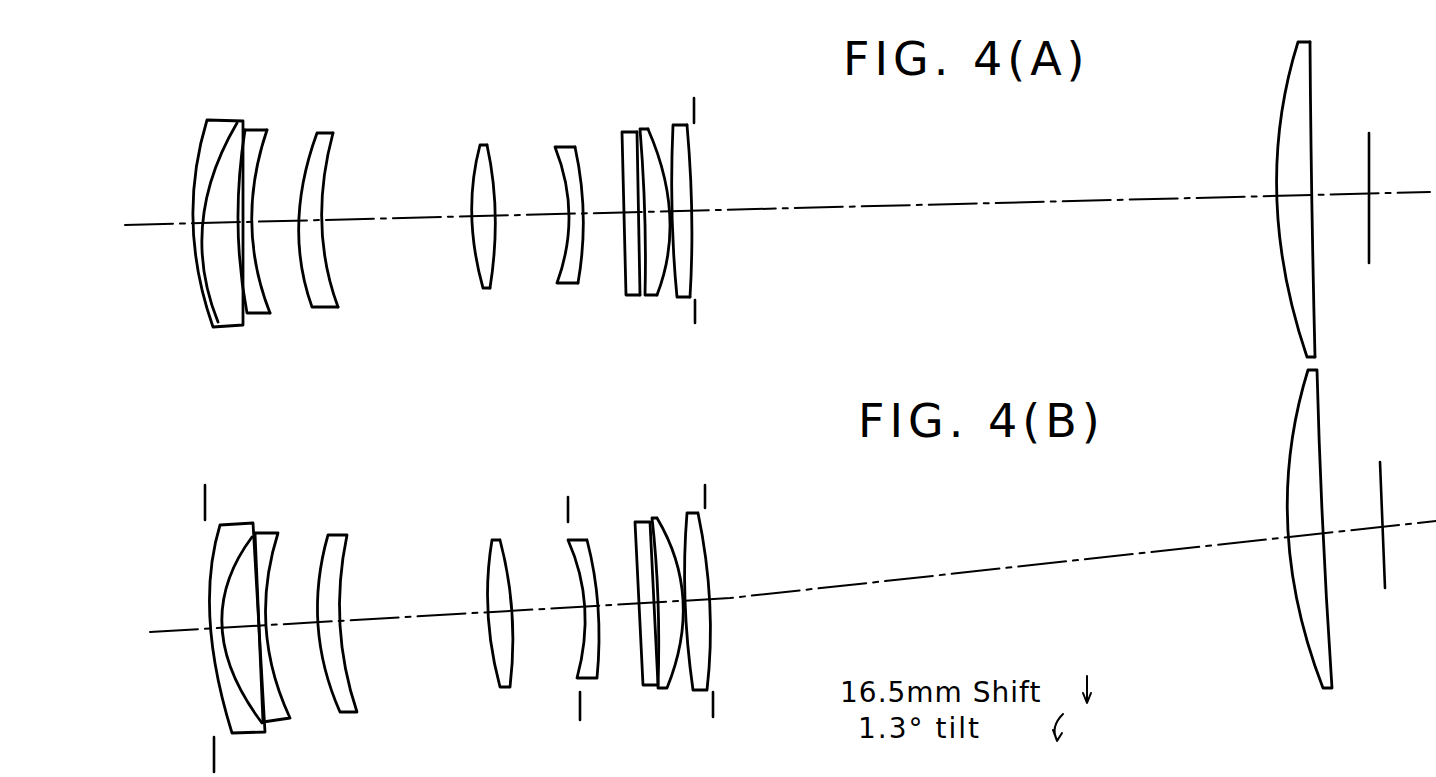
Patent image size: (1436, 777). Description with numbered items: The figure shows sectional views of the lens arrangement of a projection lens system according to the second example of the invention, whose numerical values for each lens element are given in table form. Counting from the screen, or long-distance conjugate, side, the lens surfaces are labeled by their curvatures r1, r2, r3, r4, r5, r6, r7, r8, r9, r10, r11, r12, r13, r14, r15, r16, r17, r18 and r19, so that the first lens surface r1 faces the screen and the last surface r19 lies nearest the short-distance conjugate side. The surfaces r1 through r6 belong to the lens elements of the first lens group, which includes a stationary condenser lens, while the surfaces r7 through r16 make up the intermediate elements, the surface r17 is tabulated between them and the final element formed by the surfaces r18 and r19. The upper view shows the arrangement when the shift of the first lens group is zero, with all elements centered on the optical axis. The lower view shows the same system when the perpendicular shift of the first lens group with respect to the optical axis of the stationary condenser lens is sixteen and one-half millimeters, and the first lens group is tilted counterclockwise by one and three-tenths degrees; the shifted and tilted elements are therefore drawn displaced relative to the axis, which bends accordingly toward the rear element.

The first lens surface curvature r1 is at (196, 230).
The second lens surface curvature r2 is at (219, 251).
The third lens surface curvature r3 is at (257, 255).
The fourth lens surface curvature r4 is at (276, 267).
The fifth lens surface curvature r5 is at (318, 256).
The sixth lens surface curvature r6 is at (351, 256).
The seventh lens surface curvature r7 is at (471, 261).
The eighth lens surface curvature r8 is at (501, 261).
The ninth lens surface curvature r9 is at (561, 262).
The tenth lens surface curvature r10 is at (591, 262).
The eleventh lens surface curvature r11 is at (633, 252).
The twelfth lens surface curvature r12 is at (657, 266).
The thirteenth lens surface curvature r13 is at (677, 268).
The fourteenth lens surface curvature r14 is at (684, 250).
The fifteenth lens surface curvature r15 is at (708, 227).
The sixteenth lens surface curvature r16 is at (738, 227).
The seventeenth lens surface curvature r17 is at (728, 210).
The eighteenth lens surface curvature r18 is at (1256, 199).
The nineteenth lens surface curvature r19 is at (1348, 199).